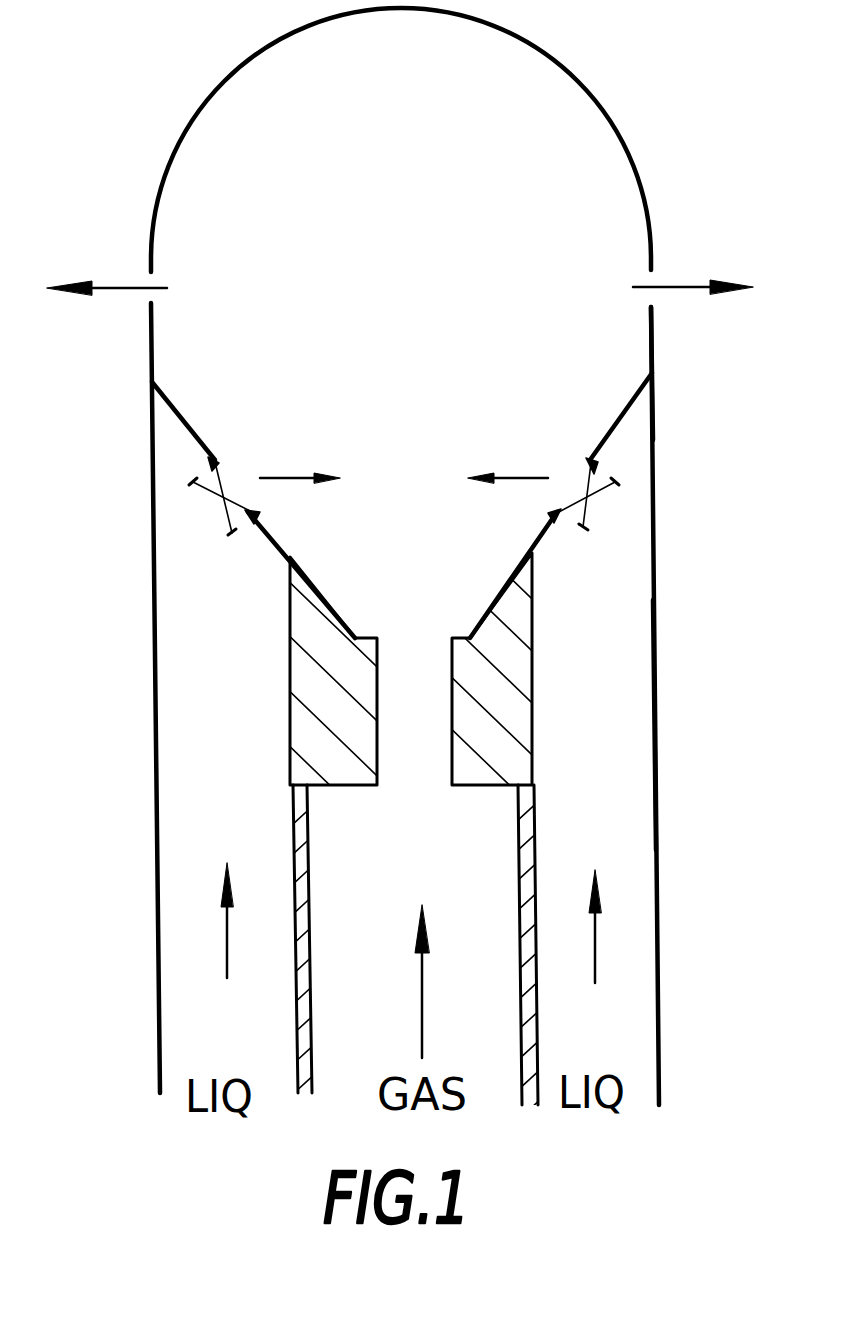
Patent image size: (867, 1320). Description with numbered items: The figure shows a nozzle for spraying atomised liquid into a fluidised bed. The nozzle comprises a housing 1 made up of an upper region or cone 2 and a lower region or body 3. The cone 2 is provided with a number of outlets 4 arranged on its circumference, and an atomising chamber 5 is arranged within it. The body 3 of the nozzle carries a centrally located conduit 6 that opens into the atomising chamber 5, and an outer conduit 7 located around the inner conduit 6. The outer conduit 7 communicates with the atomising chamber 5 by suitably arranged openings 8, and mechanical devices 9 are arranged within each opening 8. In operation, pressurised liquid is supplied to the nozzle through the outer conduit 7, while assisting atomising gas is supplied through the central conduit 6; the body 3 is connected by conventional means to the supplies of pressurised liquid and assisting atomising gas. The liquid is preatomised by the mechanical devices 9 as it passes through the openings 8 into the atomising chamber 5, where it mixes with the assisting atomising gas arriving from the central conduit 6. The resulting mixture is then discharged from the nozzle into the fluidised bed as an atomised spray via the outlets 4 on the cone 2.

The housing 1 is at (662, 613).
The cone 2 is at (652, 337).
The body 3 is at (655, 733).
The outlets 4 is at (149, 301).
The atomising chamber 5 is at (440, 223).
The centrally located conduit 6 is at (355, 1002).
The outer conduit 7 is at (207, 815).
The openings 8 is at (193, 482).
The mechanical devices 9 is at (590, 500).